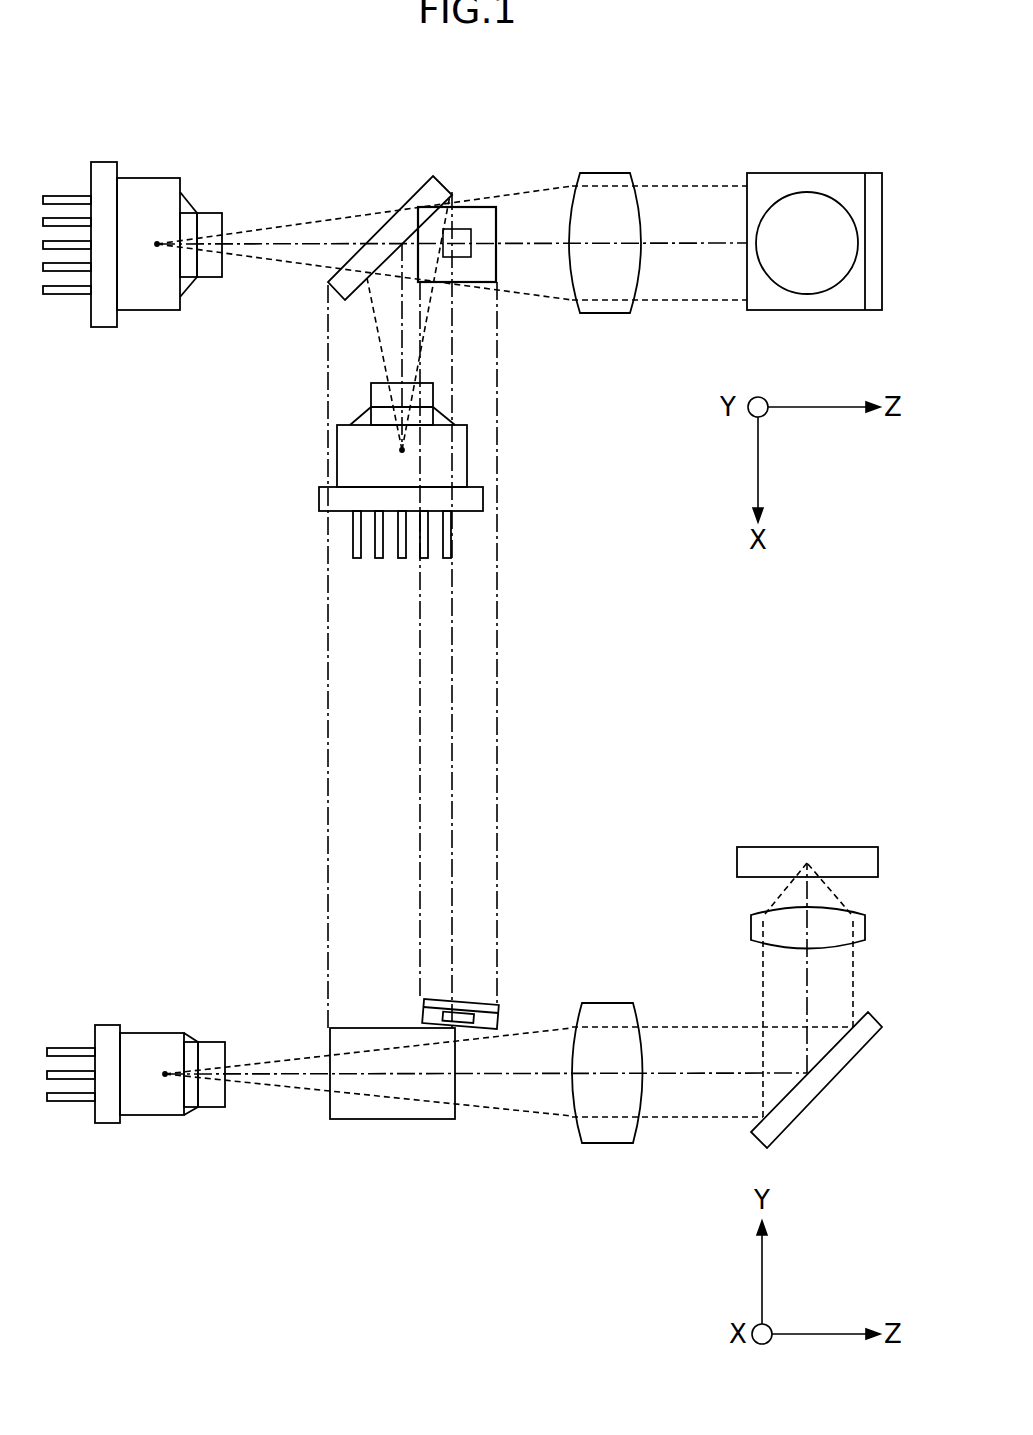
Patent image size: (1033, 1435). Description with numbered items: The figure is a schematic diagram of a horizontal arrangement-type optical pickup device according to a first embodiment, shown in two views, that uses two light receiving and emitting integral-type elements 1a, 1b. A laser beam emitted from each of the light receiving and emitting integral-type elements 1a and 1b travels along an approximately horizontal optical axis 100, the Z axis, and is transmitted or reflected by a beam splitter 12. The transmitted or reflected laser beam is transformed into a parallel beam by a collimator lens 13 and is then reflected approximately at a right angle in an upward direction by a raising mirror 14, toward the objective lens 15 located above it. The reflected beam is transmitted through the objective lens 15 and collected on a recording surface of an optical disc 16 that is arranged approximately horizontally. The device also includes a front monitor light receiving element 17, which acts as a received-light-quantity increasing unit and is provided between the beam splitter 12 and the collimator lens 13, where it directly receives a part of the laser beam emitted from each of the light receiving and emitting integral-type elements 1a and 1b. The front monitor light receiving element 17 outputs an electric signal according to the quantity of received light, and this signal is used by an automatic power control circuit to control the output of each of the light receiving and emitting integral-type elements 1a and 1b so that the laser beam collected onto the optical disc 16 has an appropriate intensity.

The light receiving and emitting integral-type element 1a is at (465, 513).
The light receiving and emitting integral-type element 1b is at (150, 312).
The beam splitter 12 is at (414, 200).
The collimator lens 13 is at (600, 173).
The raising mirror 14 is at (850, 297).
The objective lens 15 is at (805, 198).
The optical disc 16 is at (848, 847).
The front monitor light receiving element 17 is at (490, 205).
The optical axis 100 is at (280, 245).